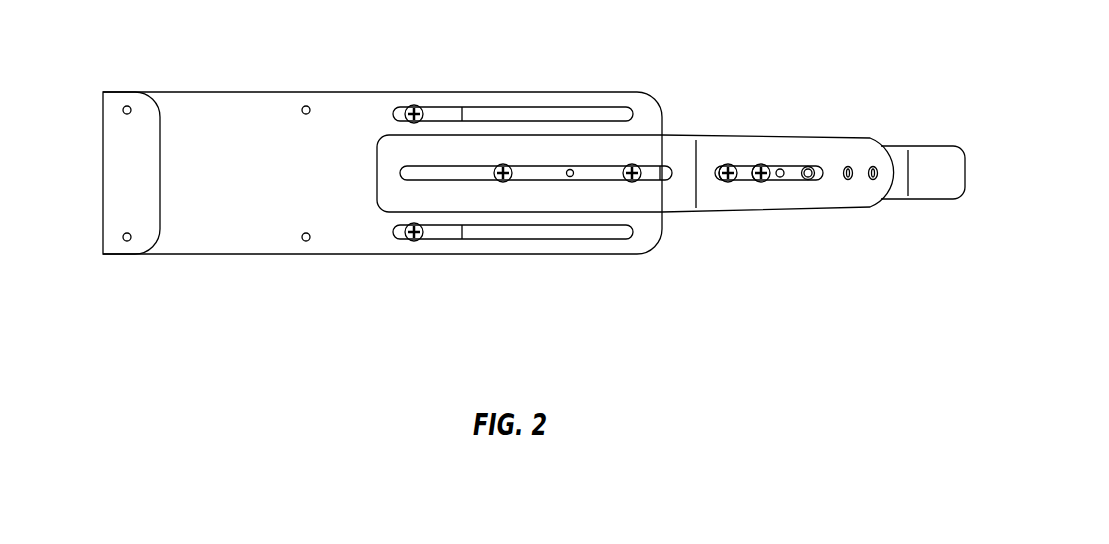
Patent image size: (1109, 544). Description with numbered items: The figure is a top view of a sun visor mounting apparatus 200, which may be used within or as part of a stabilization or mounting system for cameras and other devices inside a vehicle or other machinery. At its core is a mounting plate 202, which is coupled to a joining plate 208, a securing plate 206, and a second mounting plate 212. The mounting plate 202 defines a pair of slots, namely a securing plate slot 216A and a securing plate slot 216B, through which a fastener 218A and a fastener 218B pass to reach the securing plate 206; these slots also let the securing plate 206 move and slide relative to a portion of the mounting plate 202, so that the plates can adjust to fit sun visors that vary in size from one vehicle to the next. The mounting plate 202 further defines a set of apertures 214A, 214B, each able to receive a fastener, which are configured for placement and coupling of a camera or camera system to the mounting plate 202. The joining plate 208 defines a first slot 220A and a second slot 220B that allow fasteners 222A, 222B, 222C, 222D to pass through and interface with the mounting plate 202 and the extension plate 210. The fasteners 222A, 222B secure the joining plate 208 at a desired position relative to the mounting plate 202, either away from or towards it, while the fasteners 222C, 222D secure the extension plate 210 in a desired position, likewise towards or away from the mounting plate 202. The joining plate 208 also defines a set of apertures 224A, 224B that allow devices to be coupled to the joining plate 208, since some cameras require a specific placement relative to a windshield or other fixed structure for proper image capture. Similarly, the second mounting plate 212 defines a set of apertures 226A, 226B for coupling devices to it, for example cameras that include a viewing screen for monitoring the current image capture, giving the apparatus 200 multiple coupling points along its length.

The sun visor mounting apparatus 200 is at (228, 352).
The mounting plate 202 is at (241, 100).
The securing plate 206 is at (452, 115).
The joining plate 208 is at (705, 145).
The extension plate 210 is at (925, 160).
The second mounting plate 212 is at (120, 128).
The aperture 214A is at (304, 247).
The aperture 214B is at (308, 101).
The securing plate slot 216A is at (609, 113).
The securing plate slot 216B is at (515, 244).
The fastener 218A is at (410, 244).
The fastener 218B is at (415, 103).
The first slot 220A is at (415, 173).
The second slot 220B is at (790, 183).
The fastener 222A is at (501, 184).
The fastener 222B is at (635, 185).
The fastener 222C is at (726, 160).
The fastener 222D is at (761, 160).
The aperture 224A is at (854, 182).
The aperture 224B is at (874, 160).
The aperture 226A is at (128, 246).
The aperture 226B is at (129, 101).